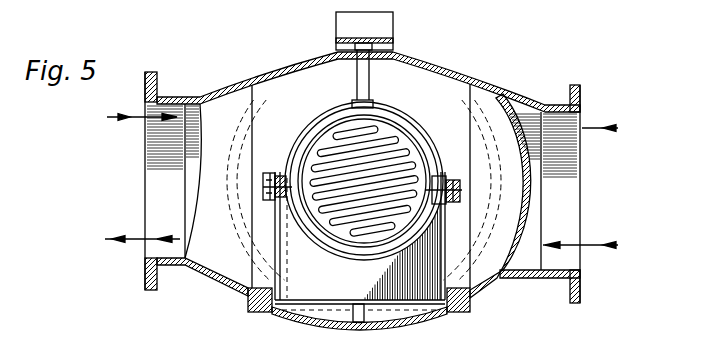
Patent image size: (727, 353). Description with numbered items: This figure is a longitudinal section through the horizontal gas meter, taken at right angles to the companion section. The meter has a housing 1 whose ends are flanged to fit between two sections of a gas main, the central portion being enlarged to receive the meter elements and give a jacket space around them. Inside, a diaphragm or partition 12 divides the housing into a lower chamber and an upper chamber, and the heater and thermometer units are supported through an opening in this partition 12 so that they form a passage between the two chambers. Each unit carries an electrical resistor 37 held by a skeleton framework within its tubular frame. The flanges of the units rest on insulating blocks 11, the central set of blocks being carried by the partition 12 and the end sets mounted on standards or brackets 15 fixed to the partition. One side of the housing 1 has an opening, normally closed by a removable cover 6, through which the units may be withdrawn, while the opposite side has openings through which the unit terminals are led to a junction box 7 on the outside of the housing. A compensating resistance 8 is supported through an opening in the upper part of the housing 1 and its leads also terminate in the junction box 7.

The housing 1 is at (275, 70).
The cover 6 is at (292, 317).
The junction box 7 is at (393, 22).
The compensating resistance 8 is at (376, 9).
The insulating blocks 11 is at (281, 174).
The partition 12 is at (192, 171).
The brackets 15 is at (265, 200).
The electrical resistor 37 is at (373, 176).